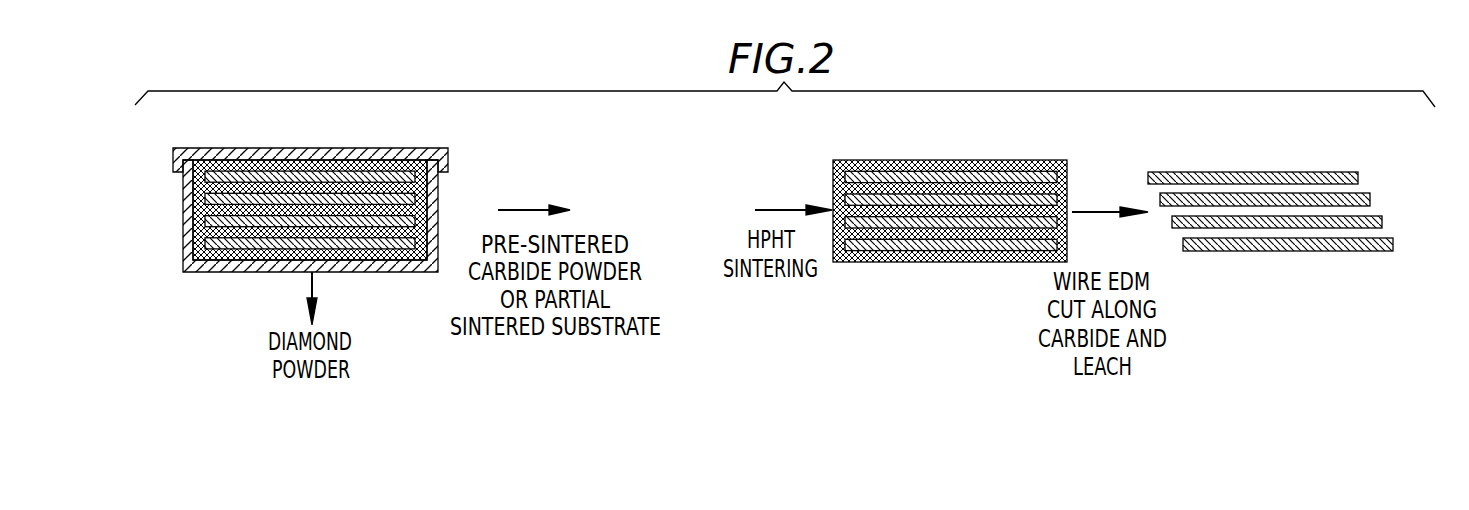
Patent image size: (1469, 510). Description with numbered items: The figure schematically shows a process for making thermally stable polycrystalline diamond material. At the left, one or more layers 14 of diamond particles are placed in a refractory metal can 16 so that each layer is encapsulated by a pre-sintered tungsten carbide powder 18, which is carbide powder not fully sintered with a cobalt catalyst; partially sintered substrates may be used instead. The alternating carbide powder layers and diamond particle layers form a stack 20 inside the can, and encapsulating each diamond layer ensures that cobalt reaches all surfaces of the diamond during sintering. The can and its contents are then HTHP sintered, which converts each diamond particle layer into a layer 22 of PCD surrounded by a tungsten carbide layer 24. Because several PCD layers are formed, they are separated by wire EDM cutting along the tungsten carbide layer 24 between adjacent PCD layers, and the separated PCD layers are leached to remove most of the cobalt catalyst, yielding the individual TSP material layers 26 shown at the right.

The layer of diamond particles 14 is at (215, 173).
The can 16 is at (433, 236).
The pre-sintered tungsten carbide powder 18 is at (205, 218).
The stack 20 is at (450, 268).
The layer of PCD 22 is at (1003, 177).
The tungsten carbide layer 24 is at (900, 160).
The TSP material layer 26 is at (1358, 178).